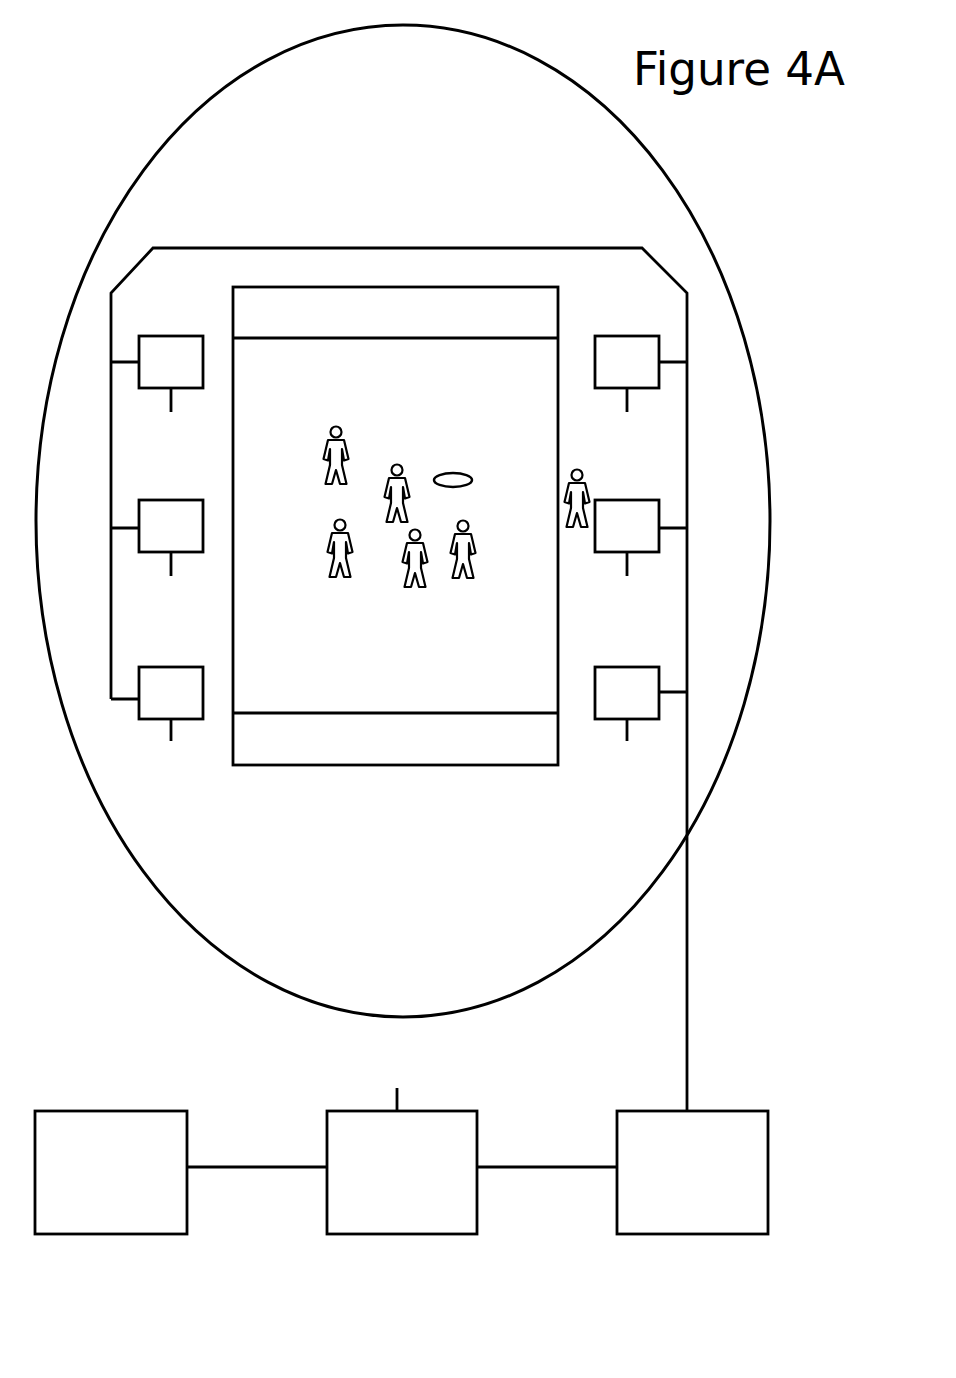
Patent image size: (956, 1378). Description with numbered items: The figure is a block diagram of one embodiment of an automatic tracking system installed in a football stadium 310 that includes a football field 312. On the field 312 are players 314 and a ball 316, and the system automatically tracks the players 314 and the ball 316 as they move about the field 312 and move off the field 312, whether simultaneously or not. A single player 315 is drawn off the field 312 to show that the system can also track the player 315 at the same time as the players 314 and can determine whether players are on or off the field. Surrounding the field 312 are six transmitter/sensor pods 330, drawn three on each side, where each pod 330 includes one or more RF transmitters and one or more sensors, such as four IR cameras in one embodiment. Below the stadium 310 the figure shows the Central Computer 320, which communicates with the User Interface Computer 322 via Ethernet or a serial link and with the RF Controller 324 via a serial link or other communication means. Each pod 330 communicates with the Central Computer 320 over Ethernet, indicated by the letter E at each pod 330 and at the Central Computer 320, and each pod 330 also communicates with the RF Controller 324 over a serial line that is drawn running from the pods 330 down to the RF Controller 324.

The football stadium 310 is at (753, 680).
The football field 312 is at (375, 766).
The players 314 is at (323, 428).
The player 315 is at (577, 468).
The ball 316 is at (452, 467).
The Central Computer 320 is at (467, 1111).
The User Interface Computer 322 is at (178, 1111).
The RF Controller 324 is at (757, 1111).
The transmitter/sensor pods 330 is at (149, 336).